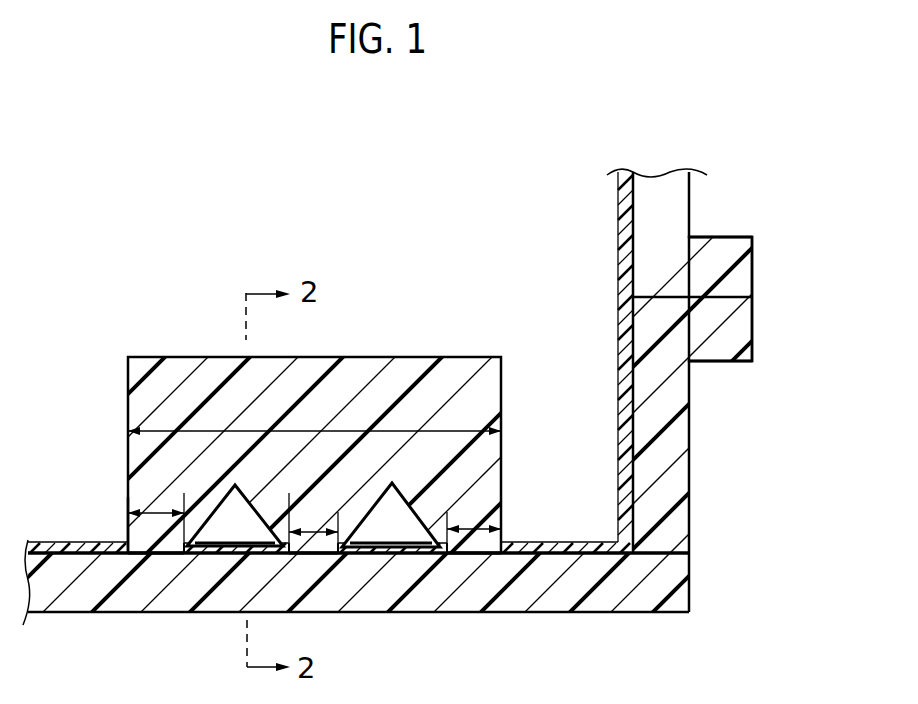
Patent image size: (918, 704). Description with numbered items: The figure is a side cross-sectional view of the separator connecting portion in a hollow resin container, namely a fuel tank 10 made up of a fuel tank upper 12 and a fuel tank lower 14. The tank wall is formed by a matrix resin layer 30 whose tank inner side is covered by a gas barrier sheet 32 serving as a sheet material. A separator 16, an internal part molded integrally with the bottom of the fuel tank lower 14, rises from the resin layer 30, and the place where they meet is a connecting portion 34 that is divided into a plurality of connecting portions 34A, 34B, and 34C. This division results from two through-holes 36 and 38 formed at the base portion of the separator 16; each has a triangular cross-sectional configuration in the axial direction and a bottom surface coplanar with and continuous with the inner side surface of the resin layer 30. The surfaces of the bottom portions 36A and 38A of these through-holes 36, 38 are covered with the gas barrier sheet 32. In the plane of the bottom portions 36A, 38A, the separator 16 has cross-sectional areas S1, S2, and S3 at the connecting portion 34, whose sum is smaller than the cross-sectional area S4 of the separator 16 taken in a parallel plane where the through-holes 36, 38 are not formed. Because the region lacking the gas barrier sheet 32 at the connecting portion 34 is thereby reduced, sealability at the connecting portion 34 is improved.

The fuel tank 10 is at (830, 268).
The fuel tank upper 12 is at (690, 220).
The fuel tank lower 14 is at (690, 378).
The separator 16 is at (366, 357).
The matrix resin layer 30 is at (632, 612).
The gas barrier sheet 32 is at (618, 503).
The connecting portion 34 is at (143, 548).
The connecting portion 34A is at (157, 533).
The connecting portion 34B is at (327, 553).
The connecting portion 34C is at (475, 553).
The through-hole 36 is at (252, 514).
The bottom portion 36A is at (207, 553).
The through-hole 38 is at (403, 527).
The bottom portion 38A is at (418, 553).
The cross-sectional area S1 is at (163, 506).
The cross-sectional area S2 is at (310, 536).
The cross-sectional area S3 is at (470, 528).
The cross-sectional area S4 is at (416, 357).